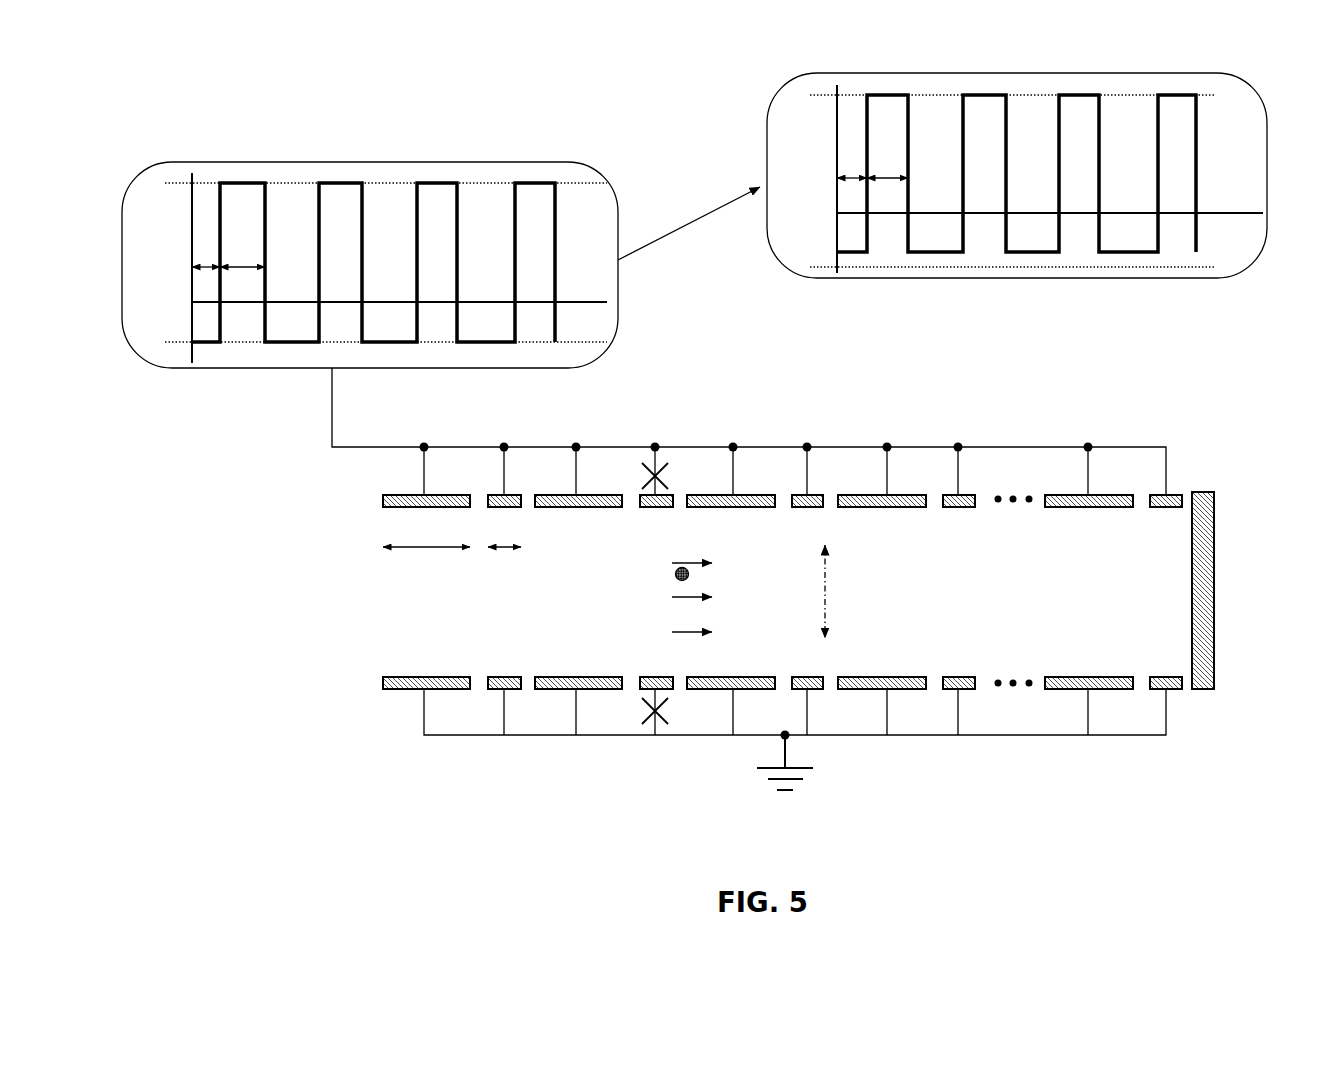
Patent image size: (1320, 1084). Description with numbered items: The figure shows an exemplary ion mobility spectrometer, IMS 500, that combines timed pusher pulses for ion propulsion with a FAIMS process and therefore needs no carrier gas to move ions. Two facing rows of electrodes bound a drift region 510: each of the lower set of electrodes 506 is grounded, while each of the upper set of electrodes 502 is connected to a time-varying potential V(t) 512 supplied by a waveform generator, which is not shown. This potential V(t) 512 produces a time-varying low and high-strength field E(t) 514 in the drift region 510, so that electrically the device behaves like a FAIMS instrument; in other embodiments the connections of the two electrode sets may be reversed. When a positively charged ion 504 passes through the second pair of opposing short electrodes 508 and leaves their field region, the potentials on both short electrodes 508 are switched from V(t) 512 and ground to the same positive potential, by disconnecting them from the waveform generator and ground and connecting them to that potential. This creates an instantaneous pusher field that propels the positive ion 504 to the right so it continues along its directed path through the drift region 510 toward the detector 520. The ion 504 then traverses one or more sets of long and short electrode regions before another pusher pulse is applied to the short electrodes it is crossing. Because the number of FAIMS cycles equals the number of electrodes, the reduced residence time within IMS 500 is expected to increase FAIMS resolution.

The IMS 500 is at (975, 362).
The upper set of electrodes 502 is at (1180, 427).
The positively charged ion 504 is at (677, 580).
The lower set of electrodes 506 is at (1180, 782).
The short electrodes 508 is at (639, 677).
The drift region 510 is at (964, 591).
The time-varying potential V(t) 512 is at (578, 163).
The time-varying low and high-strength field E(t) 514 is at (780, 260).
The detector 520 is at (1207, 690).